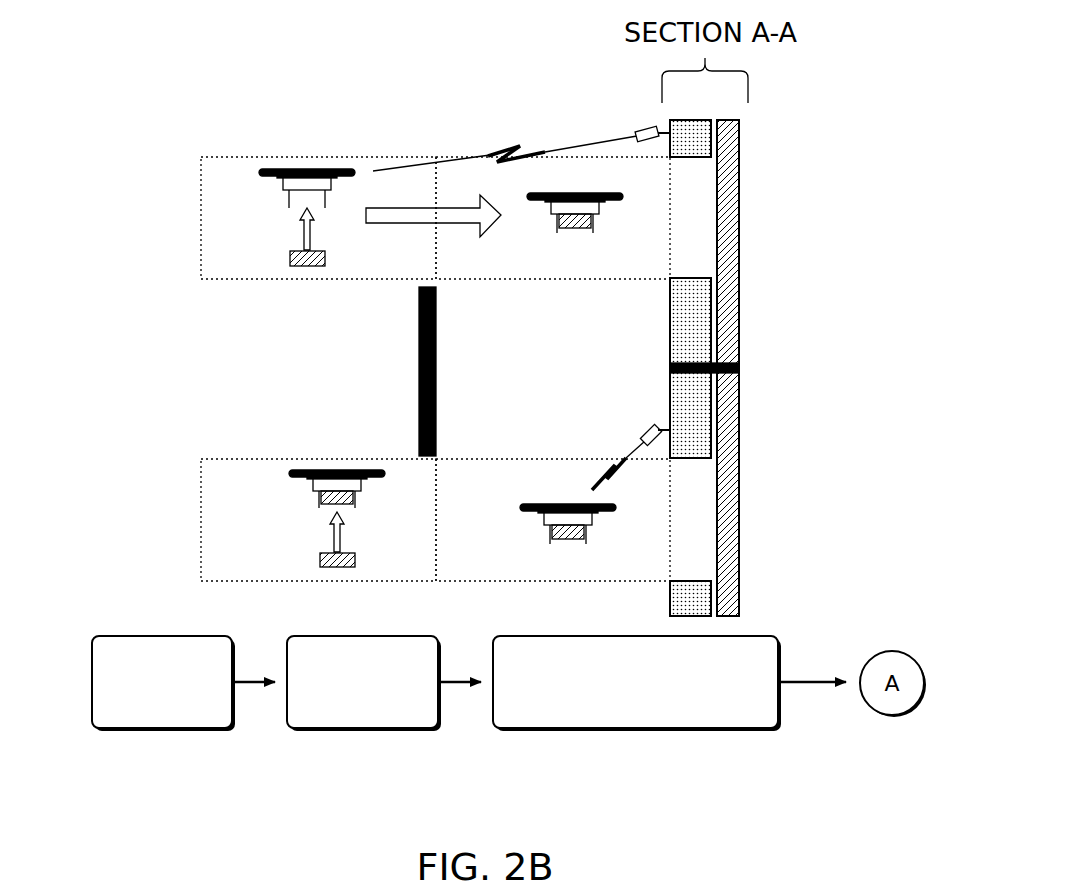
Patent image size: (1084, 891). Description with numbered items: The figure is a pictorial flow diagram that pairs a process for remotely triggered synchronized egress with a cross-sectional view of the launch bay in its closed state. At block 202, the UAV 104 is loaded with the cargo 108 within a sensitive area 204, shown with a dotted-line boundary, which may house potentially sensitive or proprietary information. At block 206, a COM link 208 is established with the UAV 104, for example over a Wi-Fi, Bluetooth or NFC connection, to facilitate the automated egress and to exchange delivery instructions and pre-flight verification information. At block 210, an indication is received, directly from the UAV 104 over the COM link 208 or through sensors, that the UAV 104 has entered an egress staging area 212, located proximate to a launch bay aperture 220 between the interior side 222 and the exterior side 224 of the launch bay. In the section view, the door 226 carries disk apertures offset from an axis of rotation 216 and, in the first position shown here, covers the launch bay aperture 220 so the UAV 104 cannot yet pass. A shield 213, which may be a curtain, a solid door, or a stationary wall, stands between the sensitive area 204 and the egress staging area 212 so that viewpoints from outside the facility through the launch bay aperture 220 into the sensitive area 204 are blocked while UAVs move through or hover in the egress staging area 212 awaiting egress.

The UAV 104 is at (306, 158).
The cargo 108 is at (308, 268).
The sensitive area 204 is at (318, 369).
The egress staging area 212 is at (553, 369).
The COM link 208 is at (486, 140).
The shield 213 is at (437, 371).
The axis of rotation 216 is at (404, 373).
The launch bay aperture 220 is at (706, 214).
The interior side 222 is at (668, 368).
The exterior side 224 is at (753, 368).
The door 226 is at (737, 277).
The block 202 is at (163, 683).
The block 206 is at (364, 683).
The block 210 is at (637, 683).